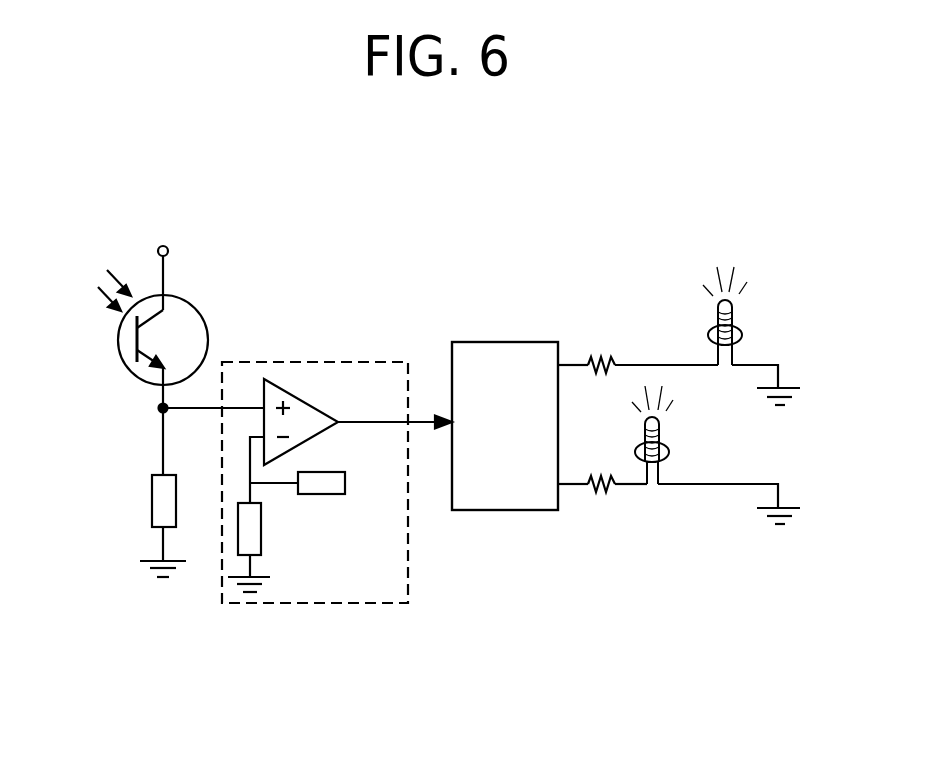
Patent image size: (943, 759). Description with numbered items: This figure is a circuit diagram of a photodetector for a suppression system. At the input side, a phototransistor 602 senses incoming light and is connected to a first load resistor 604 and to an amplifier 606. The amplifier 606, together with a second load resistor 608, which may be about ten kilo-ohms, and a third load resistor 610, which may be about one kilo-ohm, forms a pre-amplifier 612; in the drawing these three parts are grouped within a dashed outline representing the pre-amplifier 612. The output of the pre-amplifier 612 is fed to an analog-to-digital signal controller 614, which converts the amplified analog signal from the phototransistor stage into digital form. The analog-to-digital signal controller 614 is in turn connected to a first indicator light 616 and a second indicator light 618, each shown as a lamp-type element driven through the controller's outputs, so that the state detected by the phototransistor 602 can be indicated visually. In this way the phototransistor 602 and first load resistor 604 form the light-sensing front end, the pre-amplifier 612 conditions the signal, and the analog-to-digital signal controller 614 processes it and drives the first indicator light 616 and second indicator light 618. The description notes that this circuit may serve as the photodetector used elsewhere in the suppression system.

The phototransistor 602 is at (118, 345).
The first load resistor 604 is at (151, 498).
The amplifier 606 is at (316, 404).
The second load resistor 608 is at (330, 472).
The third load resistor 610 is at (262, 527).
The pre-amplifier 612 is at (342, 362).
The analog-to-digital signal controller 614 is at (522, 342).
The first indicator light 616 is at (670, 451).
The second indicator light 618 is at (744, 334).